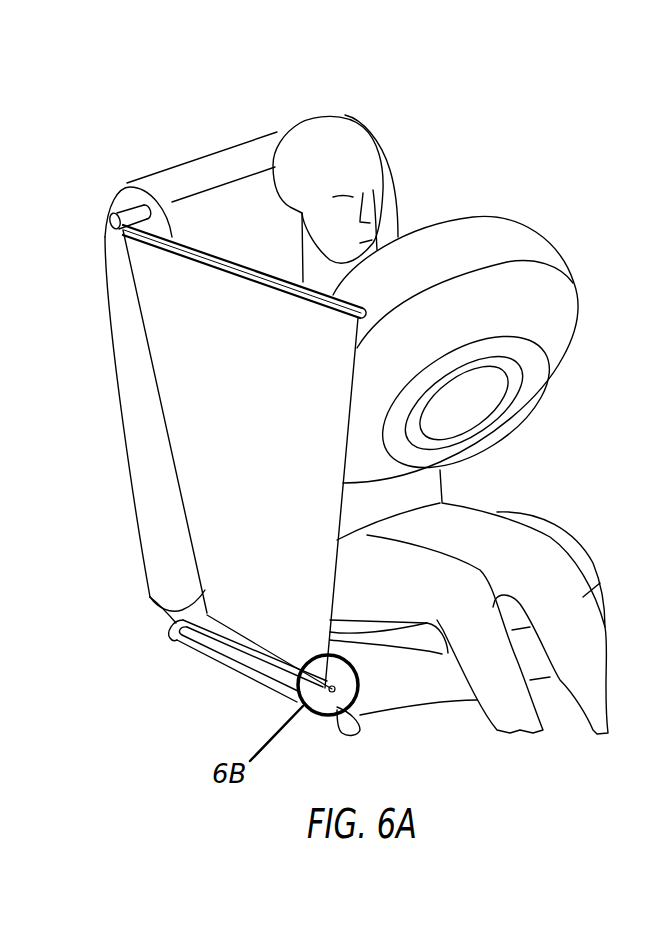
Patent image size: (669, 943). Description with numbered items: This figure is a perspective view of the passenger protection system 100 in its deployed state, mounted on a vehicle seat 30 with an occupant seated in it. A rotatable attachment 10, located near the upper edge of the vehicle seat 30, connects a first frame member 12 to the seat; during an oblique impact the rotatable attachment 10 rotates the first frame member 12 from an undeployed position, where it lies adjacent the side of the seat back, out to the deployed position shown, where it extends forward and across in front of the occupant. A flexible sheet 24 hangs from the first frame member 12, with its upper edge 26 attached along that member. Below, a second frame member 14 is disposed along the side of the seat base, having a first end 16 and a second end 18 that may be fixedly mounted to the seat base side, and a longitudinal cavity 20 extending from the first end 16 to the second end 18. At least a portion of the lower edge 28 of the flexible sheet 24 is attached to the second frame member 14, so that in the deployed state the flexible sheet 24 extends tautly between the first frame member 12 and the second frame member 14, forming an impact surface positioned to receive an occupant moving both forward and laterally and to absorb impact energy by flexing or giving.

The passenger protection system 100 is at (74, 133).
The vehicle seat 30 is at (257, 137).
The rotatable attachment 10 is at (131, 214).
The first frame member 12 is at (183, 240).
The upper edge 26 is at (242, 276).
The flexible sheet 24 is at (180, 393).
The longitudinal cavity 20 is at (277, 660).
The second frame member 14 is at (262, 688).
The lower edge 28 is at (217, 668).
The first end 16 is at (185, 647).
The second end 18 is at (357, 693).